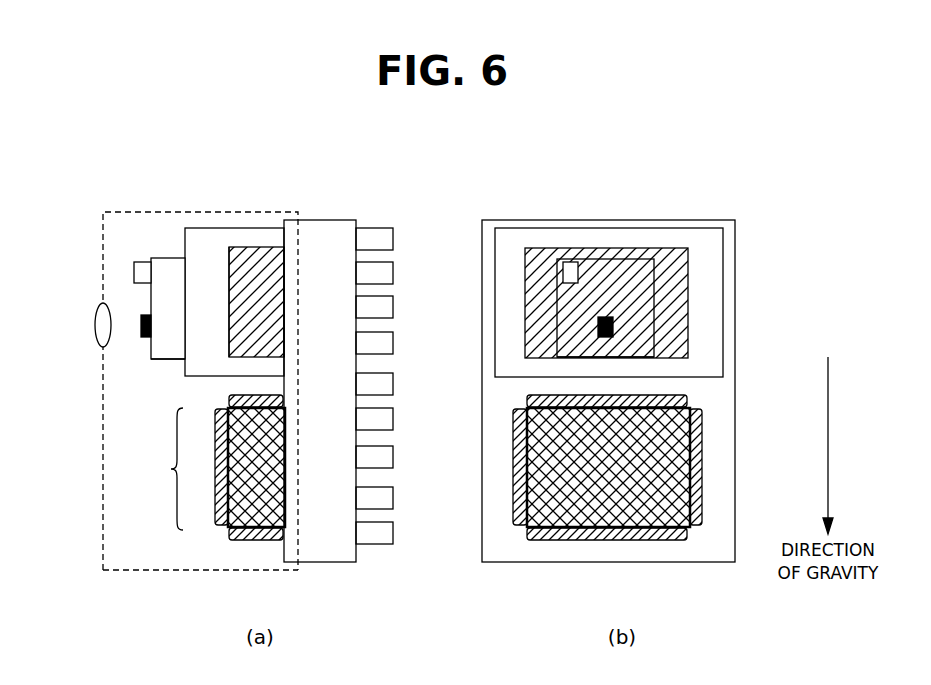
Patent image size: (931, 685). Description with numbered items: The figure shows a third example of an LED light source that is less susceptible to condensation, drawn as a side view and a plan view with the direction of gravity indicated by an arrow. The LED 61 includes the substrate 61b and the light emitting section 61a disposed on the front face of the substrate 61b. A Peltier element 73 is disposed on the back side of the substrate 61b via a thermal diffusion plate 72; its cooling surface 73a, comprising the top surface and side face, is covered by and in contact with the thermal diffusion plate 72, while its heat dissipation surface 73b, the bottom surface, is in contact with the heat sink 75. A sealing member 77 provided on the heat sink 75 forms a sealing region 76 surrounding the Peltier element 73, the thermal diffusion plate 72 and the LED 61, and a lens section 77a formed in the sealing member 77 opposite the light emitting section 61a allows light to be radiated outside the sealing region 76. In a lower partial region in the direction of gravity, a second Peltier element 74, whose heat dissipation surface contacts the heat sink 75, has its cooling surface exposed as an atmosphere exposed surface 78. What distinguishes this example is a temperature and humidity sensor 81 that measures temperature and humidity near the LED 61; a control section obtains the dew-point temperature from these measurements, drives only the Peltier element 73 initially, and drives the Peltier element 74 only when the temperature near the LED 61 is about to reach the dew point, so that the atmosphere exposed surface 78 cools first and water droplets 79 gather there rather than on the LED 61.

The LED 61 is at (152, 355).
The light emitting section 61a is at (141, 323).
The substrate 61b is at (167, 359).
The thermal diffusion plate 72 is at (215, 228).
The Peltier element 73 is at (253, 247).
The cooling surface 73a is at (228, 262).
The heat dissipation surface 73b is at (287, 275).
The Peltier element 74 is at (263, 470).
The heat sink 75 is at (543, 555).
The sealing region 76 is at (115, 530).
The sealing member 77 is at (103, 232).
The lens section 77a is at (95, 325).
The atmosphere exposed surface 78 is at (161, 469).
The water droplets 79 is at (268, 540).
The temperature and humidity sensor 81 is at (143, 262).